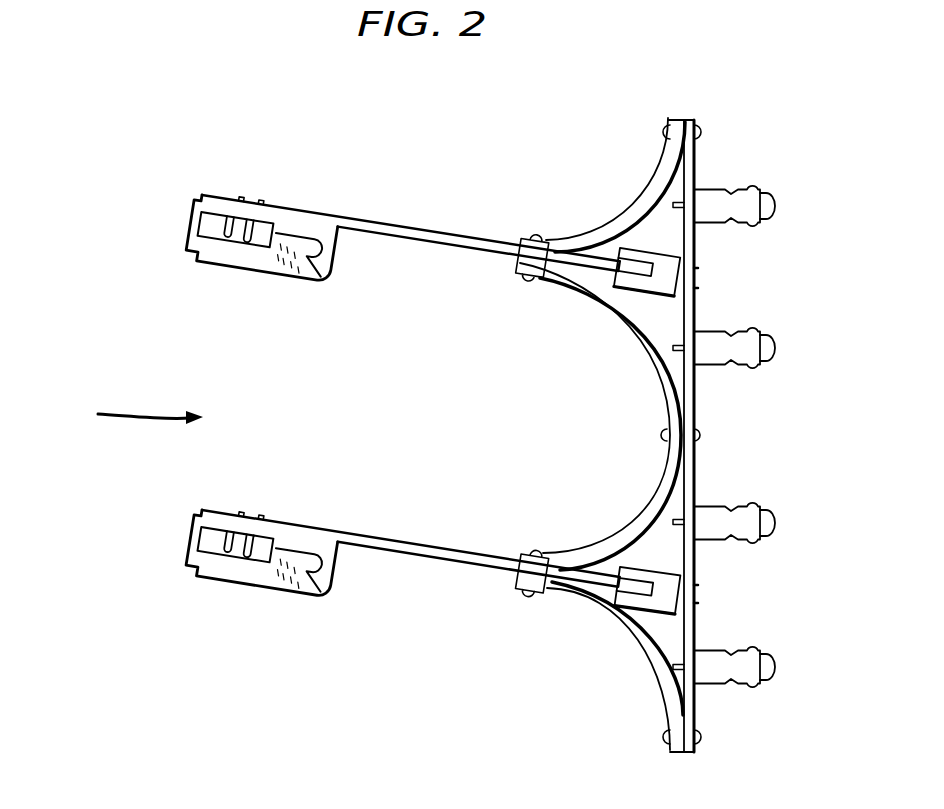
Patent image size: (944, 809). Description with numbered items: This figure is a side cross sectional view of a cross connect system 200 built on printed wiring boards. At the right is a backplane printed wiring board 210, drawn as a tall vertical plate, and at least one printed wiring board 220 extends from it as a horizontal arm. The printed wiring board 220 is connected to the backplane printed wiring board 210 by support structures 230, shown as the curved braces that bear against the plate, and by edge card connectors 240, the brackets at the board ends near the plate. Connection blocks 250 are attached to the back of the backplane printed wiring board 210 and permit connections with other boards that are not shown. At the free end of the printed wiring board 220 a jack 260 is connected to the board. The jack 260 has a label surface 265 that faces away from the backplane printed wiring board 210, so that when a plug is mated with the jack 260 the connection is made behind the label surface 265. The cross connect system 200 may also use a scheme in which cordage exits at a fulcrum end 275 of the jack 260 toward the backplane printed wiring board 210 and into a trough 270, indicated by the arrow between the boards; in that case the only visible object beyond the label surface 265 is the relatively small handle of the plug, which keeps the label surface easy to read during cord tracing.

The cross connect system 200 is at (194, 664).
The backplane printed wiring board 210 is at (700, 400).
The printed wiring board 220 is at (417, 228).
The support structure 230 is at (617, 312).
The edge card connector 240 is at (636, 624).
The connection block 250 is at (768, 190).
The jack 260 is at (243, 275).
The label surface 265 is at (194, 222).
The trough 270 is at (129, 415).
The fulcrum end 275 is at (337, 258).